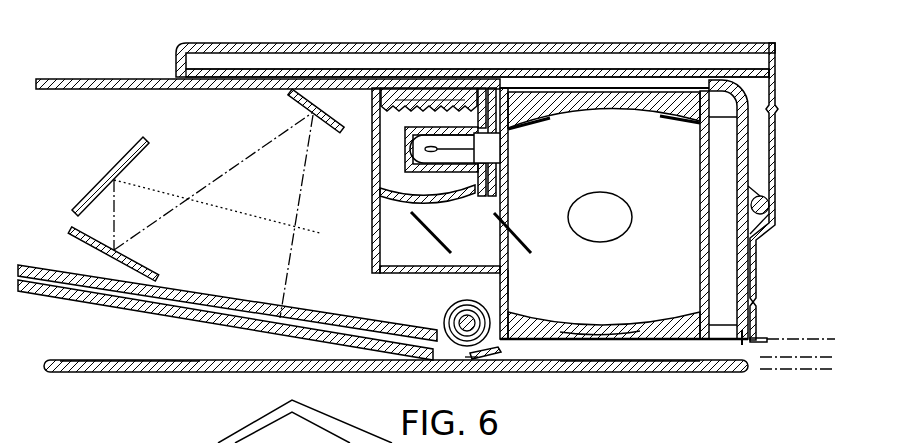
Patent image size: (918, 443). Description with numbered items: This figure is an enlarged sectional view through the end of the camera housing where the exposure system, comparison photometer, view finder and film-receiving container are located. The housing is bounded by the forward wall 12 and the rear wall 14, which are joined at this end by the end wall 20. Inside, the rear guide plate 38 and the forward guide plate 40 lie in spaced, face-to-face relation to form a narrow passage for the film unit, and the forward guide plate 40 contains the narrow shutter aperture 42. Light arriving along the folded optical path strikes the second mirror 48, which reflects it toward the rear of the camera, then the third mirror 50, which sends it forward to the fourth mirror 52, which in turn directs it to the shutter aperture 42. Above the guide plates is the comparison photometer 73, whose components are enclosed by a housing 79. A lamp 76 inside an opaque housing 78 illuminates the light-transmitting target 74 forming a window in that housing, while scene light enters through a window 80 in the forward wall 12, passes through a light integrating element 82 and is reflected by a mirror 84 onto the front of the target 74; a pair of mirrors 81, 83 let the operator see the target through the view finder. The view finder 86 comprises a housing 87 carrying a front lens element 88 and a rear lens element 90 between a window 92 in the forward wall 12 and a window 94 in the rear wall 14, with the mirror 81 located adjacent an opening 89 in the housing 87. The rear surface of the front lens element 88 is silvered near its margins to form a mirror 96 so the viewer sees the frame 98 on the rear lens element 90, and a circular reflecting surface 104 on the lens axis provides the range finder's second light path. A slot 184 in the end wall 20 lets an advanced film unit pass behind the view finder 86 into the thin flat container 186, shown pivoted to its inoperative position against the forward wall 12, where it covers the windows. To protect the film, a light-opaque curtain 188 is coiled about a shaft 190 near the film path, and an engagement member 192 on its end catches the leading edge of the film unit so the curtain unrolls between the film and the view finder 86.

The forward wall 12 is at (93, 79).
The container 186 is at (286, 42).
The window 80 is at (395, 80).
The light integrating element 82 is at (440, 95).
The lamp 76 is at (470, 110).
The opaque housing 78 is at (485, 78).
The window 92 is at (622, 80).
The fourth mirror 52 is at (298, 103).
The comparison photometer 73 is at (369, 146).
The second mirror 48 is at (135, 143).
The light-transmitting target 74 is at (448, 173).
The mirror 84 is at (383, 200).
The mirror 96 is at (520, 126).
The front lens element 88 is at (600, 112).
The view finder 86 is at (714, 146).
The circular reflecting surface 104 is at (620, 198).
The housing 87 is at (700, 250).
The end wall 20 is at (760, 255).
The third mirror 50 is at (148, 266).
The housing 79 is at (380, 274).
The mirror 83 is at (440, 270).
The rear wall 14 is at (492, 302).
The mirror 81 is at (515, 250).
The opening 89 is at (510, 282).
The shaft 190 is at (445, 320).
The frame 98 is at (562, 330).
The rear lens element 90 is at (615, 330).
The forward guide plate 40 is at (148, 322).
The shutter aperture 42 is at (285, 370).
The rear guide plate 38 is at (190, 373).
The light-opaque curtain 188 is at (462, 372).
The engagement member 192 is at (492, 365).
The window 94 is at (610, 373).
The slot 184 is at (742, 348).